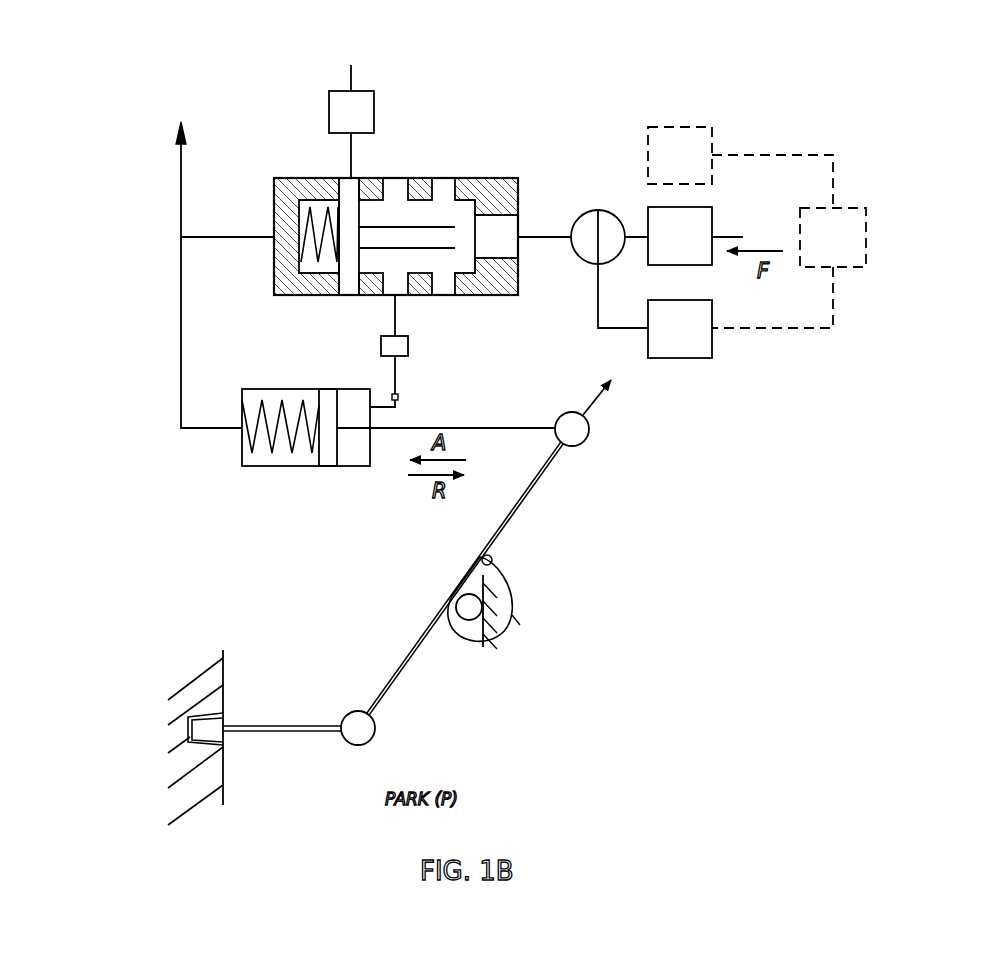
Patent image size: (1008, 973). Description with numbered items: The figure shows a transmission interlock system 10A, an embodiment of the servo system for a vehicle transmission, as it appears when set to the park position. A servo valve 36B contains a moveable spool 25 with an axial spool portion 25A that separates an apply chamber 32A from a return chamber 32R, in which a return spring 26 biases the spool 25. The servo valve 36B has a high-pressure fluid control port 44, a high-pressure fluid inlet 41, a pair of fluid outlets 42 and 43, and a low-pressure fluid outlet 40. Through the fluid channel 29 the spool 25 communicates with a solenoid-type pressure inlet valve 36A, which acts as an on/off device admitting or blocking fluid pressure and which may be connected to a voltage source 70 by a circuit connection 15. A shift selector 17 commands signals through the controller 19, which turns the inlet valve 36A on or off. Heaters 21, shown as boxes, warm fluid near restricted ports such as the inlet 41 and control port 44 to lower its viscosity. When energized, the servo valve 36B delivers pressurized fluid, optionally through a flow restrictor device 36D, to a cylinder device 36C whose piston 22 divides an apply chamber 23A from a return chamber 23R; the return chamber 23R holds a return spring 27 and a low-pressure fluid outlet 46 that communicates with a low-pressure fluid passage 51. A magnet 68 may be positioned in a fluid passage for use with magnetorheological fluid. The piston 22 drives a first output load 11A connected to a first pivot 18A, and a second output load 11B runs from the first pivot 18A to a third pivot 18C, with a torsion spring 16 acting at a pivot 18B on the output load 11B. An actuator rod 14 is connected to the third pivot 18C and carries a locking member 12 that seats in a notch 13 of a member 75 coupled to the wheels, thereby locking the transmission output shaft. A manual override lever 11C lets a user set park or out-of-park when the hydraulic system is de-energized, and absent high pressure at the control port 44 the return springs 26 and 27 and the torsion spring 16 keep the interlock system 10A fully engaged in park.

The transmission interlock system 10A is at (90, 118).
The first output load or lever 11A is at (468, 428).
The second output load or lever 11B is at (510, 527).
The manual override lever 11C is at (585, 403).
The locking member 12 is at (207, 733).
The notch 13 is at (197, 713).
The actuator rod 14 is at (282, 732).
The circuit connection 15 is at (598, 294).
The torsion spring 16 is at (508, 617).
The shift selector 17 is at (713, 135).
The first node or pivot 18A is at (587, 450).
The pivot 18B is at (457, 633).
The third node or pivot 18C is at (347, 715).
The controller 19 is at (867, 235).
The heater 21 is at (329, 110).
The piston 22 is at (330, 454).
The return chamber 23R is at (265, 453).
The apply chamber 23A is at (358, 443).
The spool 25 is at (463, 213).
The axial spool portion 25A is at (427, 235).
The return spring 26 is at (285, 232).
The return spring 27 is at (247, 440).
The fluid channel 29 is at (395, 313).
The apply chamber 32A is at (495, 250).
The return chamber 32R is at (302, 210).
The solenoid valve / pressure inlet valve 36A is at (604, 212).
The servo valve 36B is at (540, 164).
The cylinder device 36C is at (292, 373).
The flow restrictor device 36D is at (381, 341).
The low-pressure fluid outlet 40 is at (285, 242).
The HP fluid inlet 41 is at (343, 187).
The fluid outlet 42 is at (400, 187).
The fluid outlet 43 is at (447, 289).
The HP fluid control port 44 is at (523, 234).
The low-pressure fluid outlet 46 is at (242, 428).
The low-pressure fluid passage 51 is at (181, 318).
The magnet 68 is at (398, 397).
The voltage source 70 is at (712, 342).
The member 75 is at (197, 678).